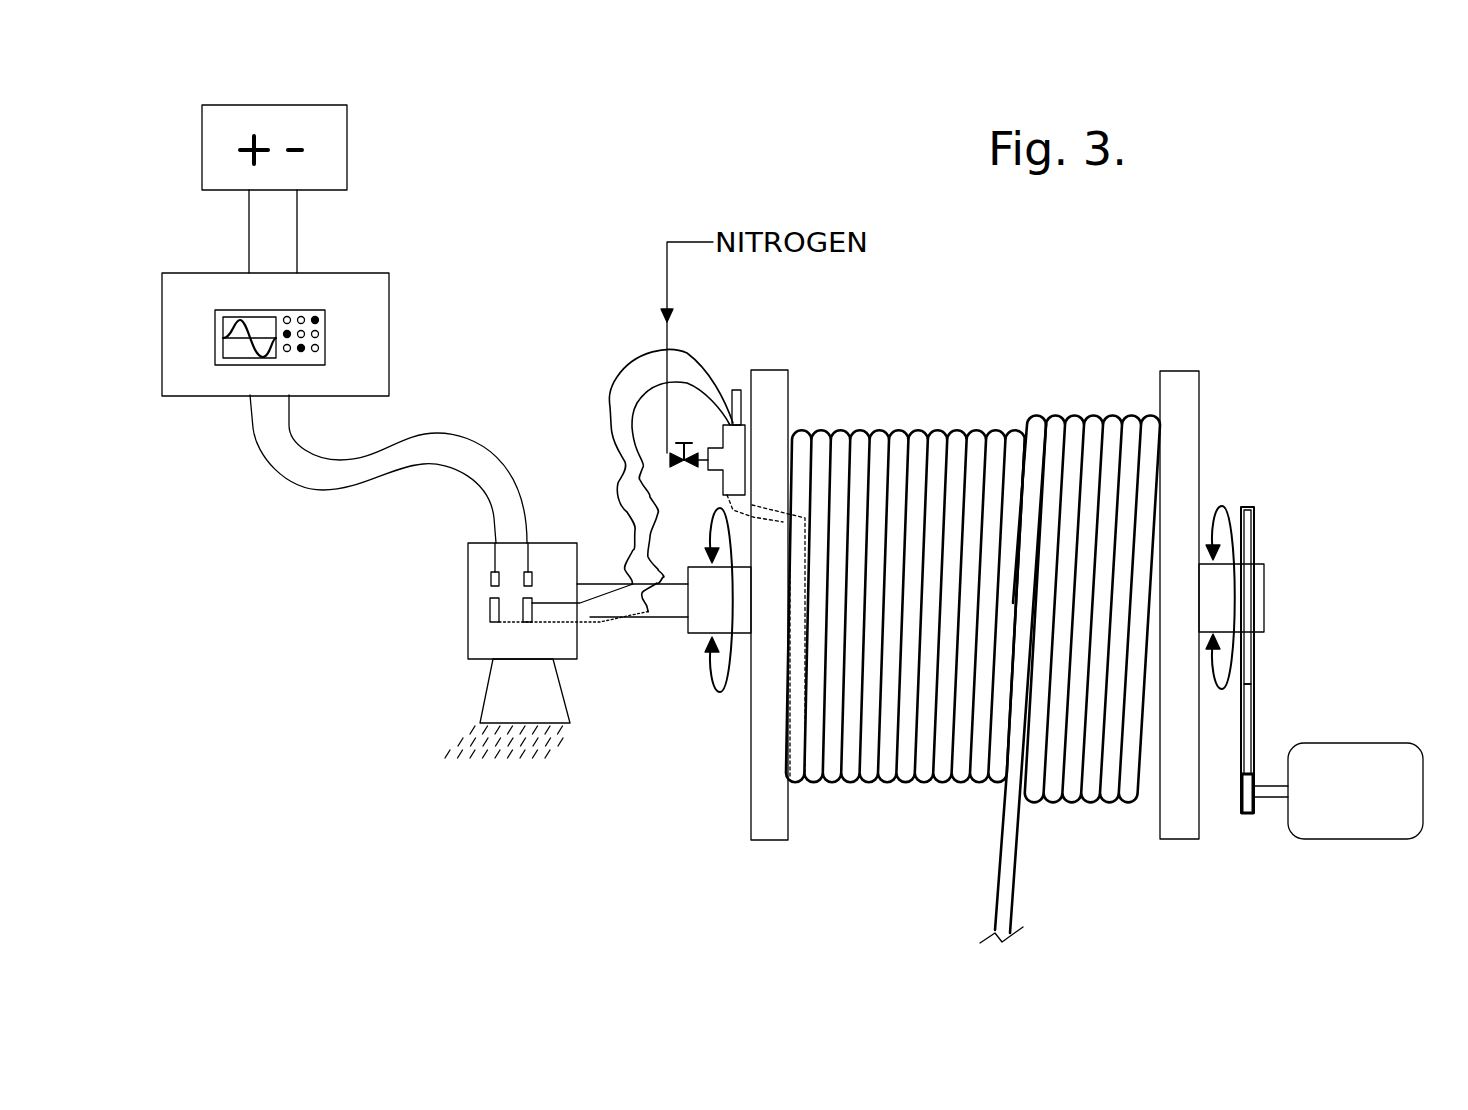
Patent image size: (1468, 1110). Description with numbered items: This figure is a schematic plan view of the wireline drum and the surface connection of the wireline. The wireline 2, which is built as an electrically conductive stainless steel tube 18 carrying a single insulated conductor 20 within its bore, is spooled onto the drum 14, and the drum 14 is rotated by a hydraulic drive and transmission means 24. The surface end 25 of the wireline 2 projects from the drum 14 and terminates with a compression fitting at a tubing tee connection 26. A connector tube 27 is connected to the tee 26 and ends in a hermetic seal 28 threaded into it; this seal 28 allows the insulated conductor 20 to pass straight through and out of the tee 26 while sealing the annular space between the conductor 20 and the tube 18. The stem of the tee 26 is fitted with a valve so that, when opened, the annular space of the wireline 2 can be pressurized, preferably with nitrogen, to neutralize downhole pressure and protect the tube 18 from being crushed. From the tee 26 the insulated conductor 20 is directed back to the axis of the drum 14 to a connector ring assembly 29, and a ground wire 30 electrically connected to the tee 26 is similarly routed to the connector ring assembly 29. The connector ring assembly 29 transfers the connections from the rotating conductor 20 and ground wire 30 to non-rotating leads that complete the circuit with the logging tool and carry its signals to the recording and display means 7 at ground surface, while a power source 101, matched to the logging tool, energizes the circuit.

The power source 101 is at (336, 186).
The recording and display means 7 is at (314, 320).
The connector ring assembly 29 is at (469, 576).
The insulated conductor 20 is at (632, 454).
The ground wire 30 is at (625, 492).
The hermetic seal 28 is at (731, 361).
The connector tube 27 is at (756, 407).
The tubing tee connection 26 is at (796, 548).
The surface end 25 is at (780, 597).
The wireline 2 is at (973, 642).
The electrically conductive tube 18 is at (1047, 684).
The drum 14 is at (1240, 570).
The hydraulic drive and transmission means 24 is at (1343, 673).